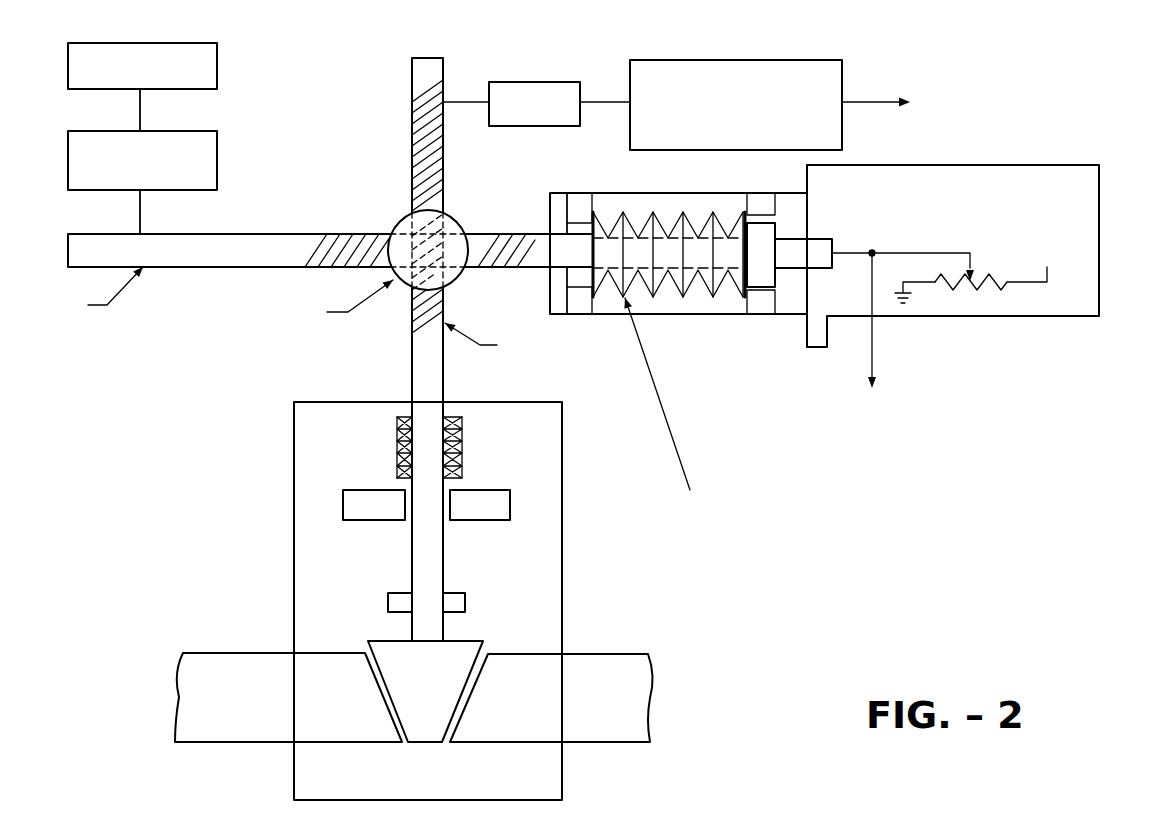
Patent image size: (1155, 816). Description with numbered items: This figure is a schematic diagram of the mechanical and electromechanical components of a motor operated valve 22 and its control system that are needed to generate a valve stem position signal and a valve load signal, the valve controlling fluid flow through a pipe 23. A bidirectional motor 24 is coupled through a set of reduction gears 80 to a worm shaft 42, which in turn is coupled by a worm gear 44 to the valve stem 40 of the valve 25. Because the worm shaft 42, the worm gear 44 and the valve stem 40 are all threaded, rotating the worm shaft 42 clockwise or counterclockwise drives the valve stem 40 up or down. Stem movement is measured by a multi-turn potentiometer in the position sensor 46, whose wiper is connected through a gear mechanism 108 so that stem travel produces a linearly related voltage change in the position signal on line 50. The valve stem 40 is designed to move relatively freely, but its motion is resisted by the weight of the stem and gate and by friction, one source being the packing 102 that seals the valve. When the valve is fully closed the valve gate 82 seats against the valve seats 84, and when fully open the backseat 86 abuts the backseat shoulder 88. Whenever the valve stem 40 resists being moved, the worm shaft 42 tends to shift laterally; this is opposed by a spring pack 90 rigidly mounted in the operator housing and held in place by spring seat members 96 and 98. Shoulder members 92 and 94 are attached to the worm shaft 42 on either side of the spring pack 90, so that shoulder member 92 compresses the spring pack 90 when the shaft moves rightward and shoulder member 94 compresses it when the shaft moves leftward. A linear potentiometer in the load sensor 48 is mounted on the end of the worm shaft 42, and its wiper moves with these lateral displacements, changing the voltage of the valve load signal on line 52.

The motor operated valve 22 is at (225, 348).
The pipe 23 is at (213, 653).
The motor 24 is at (217, 62).
The valve 25 is at (562, 455).
The valve stem 40 is at (443, 138).
The worm shaft 42 is at (178, 267).
The worm gear 44 is at (452, 217).
The position sensor 46 is at (842, 76).
The load sensor 48 is at (1099, 213).
The line 50 is at (880, 102).
The line 52 is at (872, 333).
The reduction gears 80 is at (217, 163).
The valve gate 82 is at (470, 641).
The valve seats 84 is at (325, 732).
The backseat 86 is at (458, 601).
The backseat shoulder 88 is at (477, 513).
The spring pack 90 is at (722, 290).
The shoulder member 92 is at (572, 270).
The shoulder member 94 is at (770, 308).
The spring seat member 96 is at (577, 305).
The spring seat member 98 is at (762, 312).
The packing 102 is at (462, 451).
The gear mechanism 108 is at (525, 82).